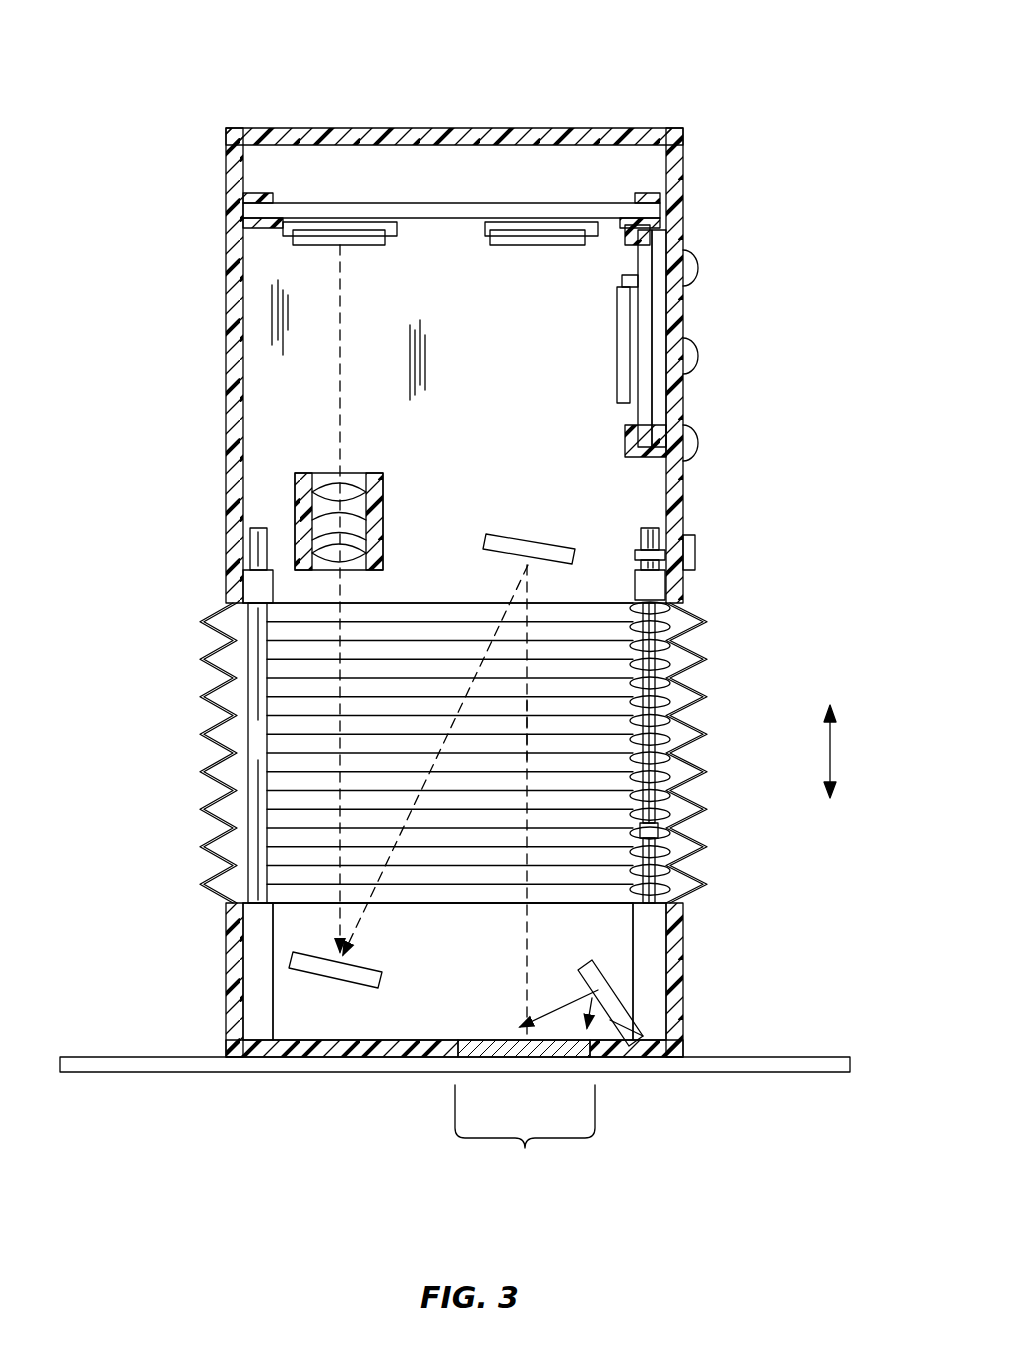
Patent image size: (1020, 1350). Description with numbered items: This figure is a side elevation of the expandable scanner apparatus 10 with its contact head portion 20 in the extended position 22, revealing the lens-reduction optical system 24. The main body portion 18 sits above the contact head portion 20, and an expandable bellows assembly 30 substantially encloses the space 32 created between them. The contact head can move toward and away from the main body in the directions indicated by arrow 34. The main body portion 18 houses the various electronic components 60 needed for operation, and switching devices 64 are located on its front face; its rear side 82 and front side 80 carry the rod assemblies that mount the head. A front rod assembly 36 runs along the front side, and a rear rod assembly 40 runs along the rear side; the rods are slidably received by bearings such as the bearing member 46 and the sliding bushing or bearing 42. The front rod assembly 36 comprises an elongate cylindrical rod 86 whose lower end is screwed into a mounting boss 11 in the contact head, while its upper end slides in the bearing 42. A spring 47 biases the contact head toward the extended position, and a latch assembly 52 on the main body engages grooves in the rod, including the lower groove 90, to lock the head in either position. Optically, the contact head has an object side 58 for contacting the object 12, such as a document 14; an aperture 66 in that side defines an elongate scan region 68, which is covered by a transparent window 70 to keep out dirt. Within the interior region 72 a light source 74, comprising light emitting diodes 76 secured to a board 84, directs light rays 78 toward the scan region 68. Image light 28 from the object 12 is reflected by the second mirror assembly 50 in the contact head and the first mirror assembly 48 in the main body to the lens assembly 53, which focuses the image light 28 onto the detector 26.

The expandable scanner apparatus 10 is at (152, 52).
The mounting boss 11 is at (632, 924).
The object 12 is at (790, 1052).
The document 14 is at (850, 1062).
The main body portion 18 is at (222, 225).
The contact head portion 20 is at (222, 963).
The extended position 22 is at (225, 1001).
The optical system 24 is at (482, 448).
The detector 26 is at (363, 246).
The image light 28 is at (528, 730).
The bellows assembly 30 is at (200, 700).
The space 32 is at (450, 753).
The arrow 34 is at (832, 752).
The front rod assembly 36 is at (670, 878).
The rear rod assembly 40 is at (244, 770).
The bearing 42 is at (635, 583).
The bearing member 46 is at (273, 585).
The spring 47 is at (672, 707).
The first mirror assembly 48 is at (530, 542).
The second mirror assembly 50 is at (345, 977).
The latch assembly 52 is at (695, 552).
The lens assembly 53 is at (385, 520).
The object side 58 is at (322, 1060).
The electronic components 60 is at (617, 300).
The switching devices 64 is at (686, 255).
The aperture 66 is at (590, 1058).
The scan region 68 is at (525, 1137).
The transparent window 70 is at (490, 1040).
The interior region 72 is at (453, 971).
The light source 74 is at (625, 975).
The light emitting diodes 76 is at (645, 1020).
The light rays 78 is at (564, 998).
The front side 80 is at (683, 186).
The rear side 82 is at (226, 302).
The board 84 is at (615, 972).
The cylindrical rod 86 is at (668, 768).
The lower groove 90 is at (660, 826).